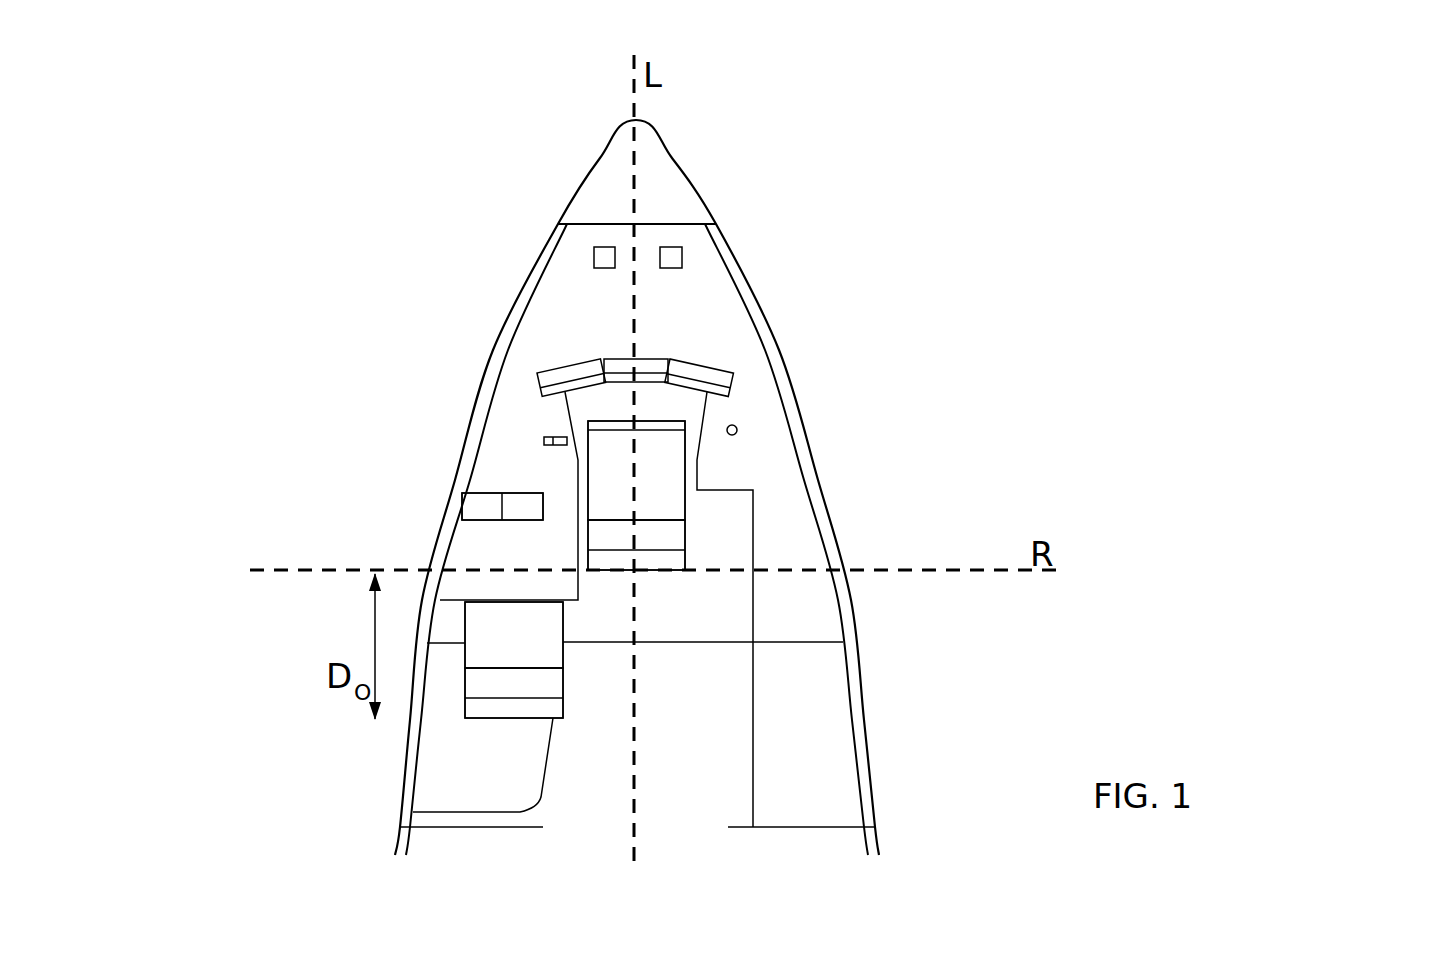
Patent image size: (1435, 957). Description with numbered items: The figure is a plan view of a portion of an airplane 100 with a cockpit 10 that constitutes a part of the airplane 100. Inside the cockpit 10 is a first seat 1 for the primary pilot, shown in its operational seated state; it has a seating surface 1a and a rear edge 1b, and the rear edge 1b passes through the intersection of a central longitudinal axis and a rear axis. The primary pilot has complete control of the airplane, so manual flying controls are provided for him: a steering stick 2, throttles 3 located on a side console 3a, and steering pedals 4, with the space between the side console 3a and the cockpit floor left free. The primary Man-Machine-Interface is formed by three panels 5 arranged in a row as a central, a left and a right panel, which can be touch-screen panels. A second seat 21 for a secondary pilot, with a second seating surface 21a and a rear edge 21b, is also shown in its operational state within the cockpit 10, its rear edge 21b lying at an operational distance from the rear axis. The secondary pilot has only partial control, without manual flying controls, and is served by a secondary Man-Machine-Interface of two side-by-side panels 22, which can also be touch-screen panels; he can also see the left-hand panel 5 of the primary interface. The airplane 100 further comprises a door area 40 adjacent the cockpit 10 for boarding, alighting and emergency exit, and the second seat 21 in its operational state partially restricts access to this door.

The airplane 100 is at (1112, 225).
The cockpit 10 is at (840, 458).
The first seat 1 is at (640, 507).
The seating surface 1a is at (655, 488).
The rear edge 1b is at (653, 573).
The steering stick 2 is at (742, 427).
The throttles 3 is at (543, 437).
The side console 3a is at (520, 482).
The steering pedals 4 is at (690, 243).
The panels 5 is at (712, 363).
The second seat 21 is at (507, 648).
The second seating surface 21a is at (545, 639).
The rear edge 21b is at (475, 720).
The panels 22 is at (475, 515).
The door area 40 is at (457, 762).